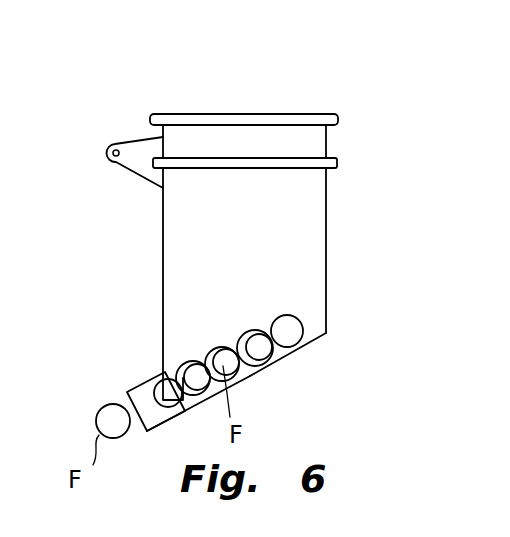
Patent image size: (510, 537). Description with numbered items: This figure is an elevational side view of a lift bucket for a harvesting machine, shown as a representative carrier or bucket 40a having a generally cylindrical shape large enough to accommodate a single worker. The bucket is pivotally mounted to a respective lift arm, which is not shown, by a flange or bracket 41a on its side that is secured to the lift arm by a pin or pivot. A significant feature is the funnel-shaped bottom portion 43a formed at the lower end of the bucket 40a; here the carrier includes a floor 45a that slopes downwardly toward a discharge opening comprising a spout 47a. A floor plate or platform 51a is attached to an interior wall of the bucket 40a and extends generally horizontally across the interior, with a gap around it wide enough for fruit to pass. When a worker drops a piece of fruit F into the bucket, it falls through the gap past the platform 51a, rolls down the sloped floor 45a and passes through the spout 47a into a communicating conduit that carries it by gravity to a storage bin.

The carrier bucket 40a is at (326, 205).
The flange or bracket 41a is at (142, 138).
The funnel-shaped bottom portion 43a is at (250, 376).
The floor 45a is at (290, 348).
The spout 47a is at (138, 382).
The floor plate or platform 51a is at (218, 347).